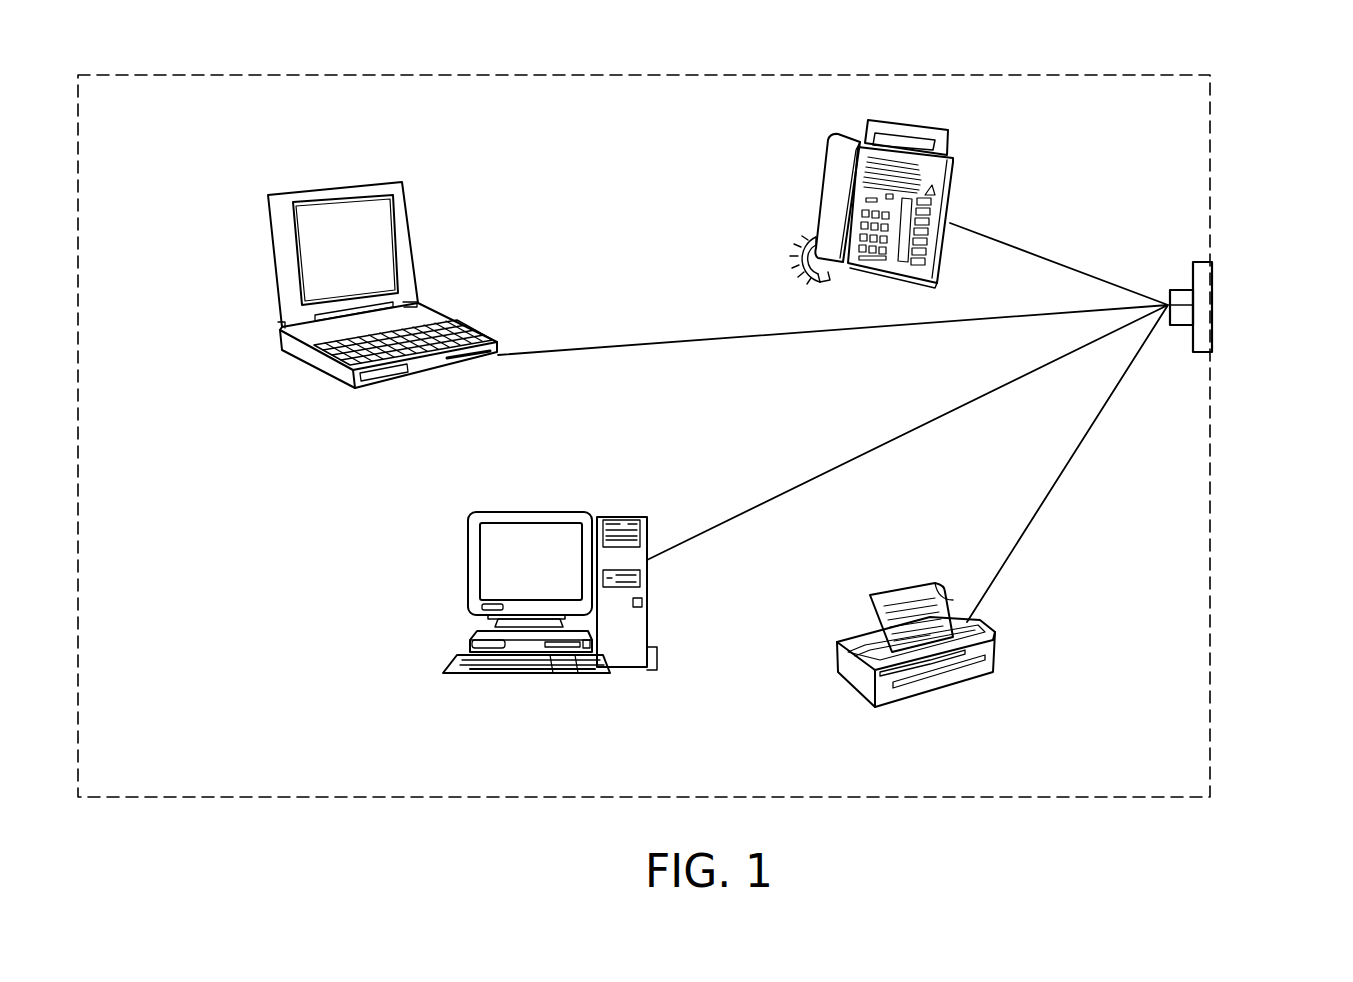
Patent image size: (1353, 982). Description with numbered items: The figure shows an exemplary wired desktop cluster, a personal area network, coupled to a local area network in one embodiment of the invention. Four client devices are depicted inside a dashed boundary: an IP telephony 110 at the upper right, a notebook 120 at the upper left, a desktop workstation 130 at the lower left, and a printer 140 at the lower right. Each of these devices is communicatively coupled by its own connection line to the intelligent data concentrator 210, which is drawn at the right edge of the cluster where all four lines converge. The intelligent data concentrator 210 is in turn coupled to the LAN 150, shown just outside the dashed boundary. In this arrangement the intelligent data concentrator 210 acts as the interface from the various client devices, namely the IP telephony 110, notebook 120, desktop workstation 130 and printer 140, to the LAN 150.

The IP telephony 110 is at (822, 197).
The notebook 120 is at (323, 377).
The desktop workstation 130 is at (470, 643).
The printer 140 is at (895, 705).
The local area network (LAN) 150 is at (1324, 345).
The intelligent data concentrator 210 is at (1145, 241).